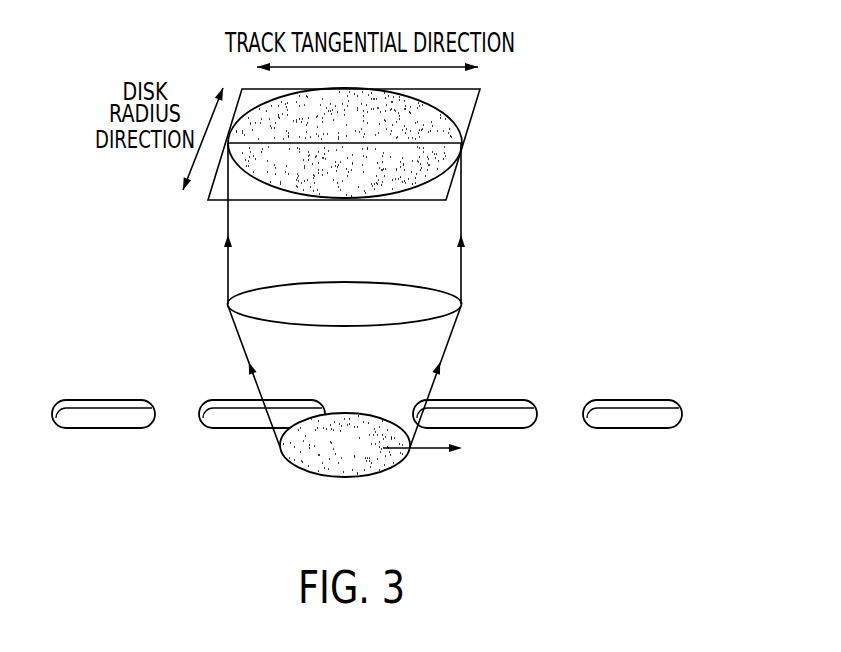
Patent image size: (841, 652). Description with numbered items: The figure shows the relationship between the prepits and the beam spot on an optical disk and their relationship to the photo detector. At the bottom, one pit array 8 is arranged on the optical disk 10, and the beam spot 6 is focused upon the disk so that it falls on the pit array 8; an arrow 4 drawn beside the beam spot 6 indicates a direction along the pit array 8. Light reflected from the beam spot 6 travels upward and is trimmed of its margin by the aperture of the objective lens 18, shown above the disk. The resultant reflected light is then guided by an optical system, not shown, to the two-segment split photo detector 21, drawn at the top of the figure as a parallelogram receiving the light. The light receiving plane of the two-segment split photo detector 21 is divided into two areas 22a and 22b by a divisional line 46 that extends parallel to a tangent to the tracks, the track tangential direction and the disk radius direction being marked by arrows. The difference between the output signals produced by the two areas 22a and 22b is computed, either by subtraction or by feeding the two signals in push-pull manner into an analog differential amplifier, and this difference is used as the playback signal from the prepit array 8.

The two-segment split photo detector 21 is at (493, 96).
The light receiving area 22a is at (438, 125).
The light receiving area 22b is at (400, 175).
The divisional line 46 is at (443, 145).
The objective lens 18 is at (430, 297).
The pit array 8 is at (508, 401).
The beam spot 6 is at (293, 463).
The disk rotation direction 4 is at (421, 450).
The optical disk 10 is at (662, 465).